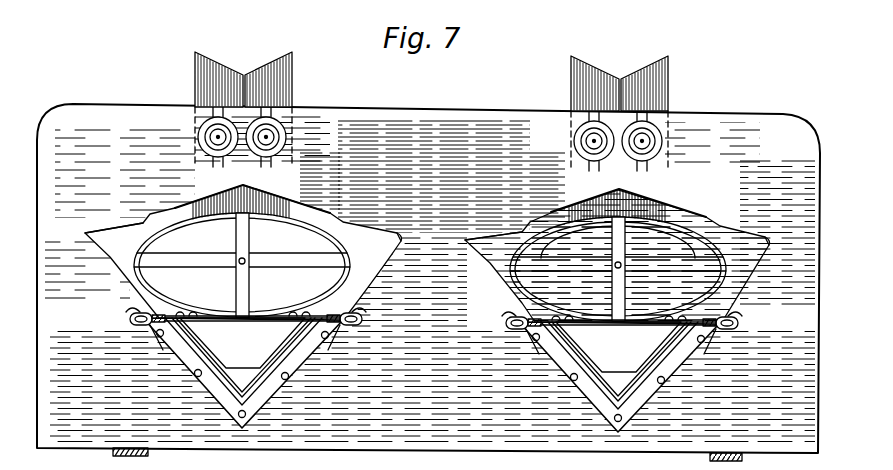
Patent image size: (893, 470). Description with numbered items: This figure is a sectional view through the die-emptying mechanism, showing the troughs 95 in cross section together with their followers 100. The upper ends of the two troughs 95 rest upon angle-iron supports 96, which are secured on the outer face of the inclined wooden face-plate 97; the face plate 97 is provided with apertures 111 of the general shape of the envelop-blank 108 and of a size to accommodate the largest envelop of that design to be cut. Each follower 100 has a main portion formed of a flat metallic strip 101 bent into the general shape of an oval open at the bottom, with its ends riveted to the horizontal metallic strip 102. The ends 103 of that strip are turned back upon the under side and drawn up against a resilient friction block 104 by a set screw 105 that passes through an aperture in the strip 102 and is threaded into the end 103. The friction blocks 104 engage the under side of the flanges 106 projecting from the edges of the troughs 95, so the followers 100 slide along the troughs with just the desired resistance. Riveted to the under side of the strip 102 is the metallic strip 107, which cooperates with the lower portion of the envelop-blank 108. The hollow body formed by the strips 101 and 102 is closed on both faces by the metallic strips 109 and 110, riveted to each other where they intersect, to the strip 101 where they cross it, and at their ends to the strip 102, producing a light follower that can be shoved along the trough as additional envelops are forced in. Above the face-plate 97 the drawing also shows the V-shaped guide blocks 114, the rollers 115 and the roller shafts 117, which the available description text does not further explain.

The trough 95 is at (298, 352).
The angle-iron support 96 is at (431, 375).
The inclined wooden face-plate 97 is at (428, 282).
The follower 100 is at (161, 211).
The flat metallic strip 101 is at (345, 230).
The horizontal metallic strip 102 is at (273, 310).
The turned-back ends 103 is at (152, 325).
The resilient friction block 104 is at (130, 319).
The set screw 105 is at (136, 311).
The flange 106 is at (166, 332).
The metallic strip 107 is at (276, 352).
The envelop-blank 108 is at (758, 266).
The metallic strip 109 is at (203, 252).
The metallic strip 110 is at (236, 293).
The aperture 111 is at (380, 266).
The V-shaped guide block 114 is at (258, 72).
The roller 115 is at (213, 103).
The roller shaft 117 is at (264, 105).